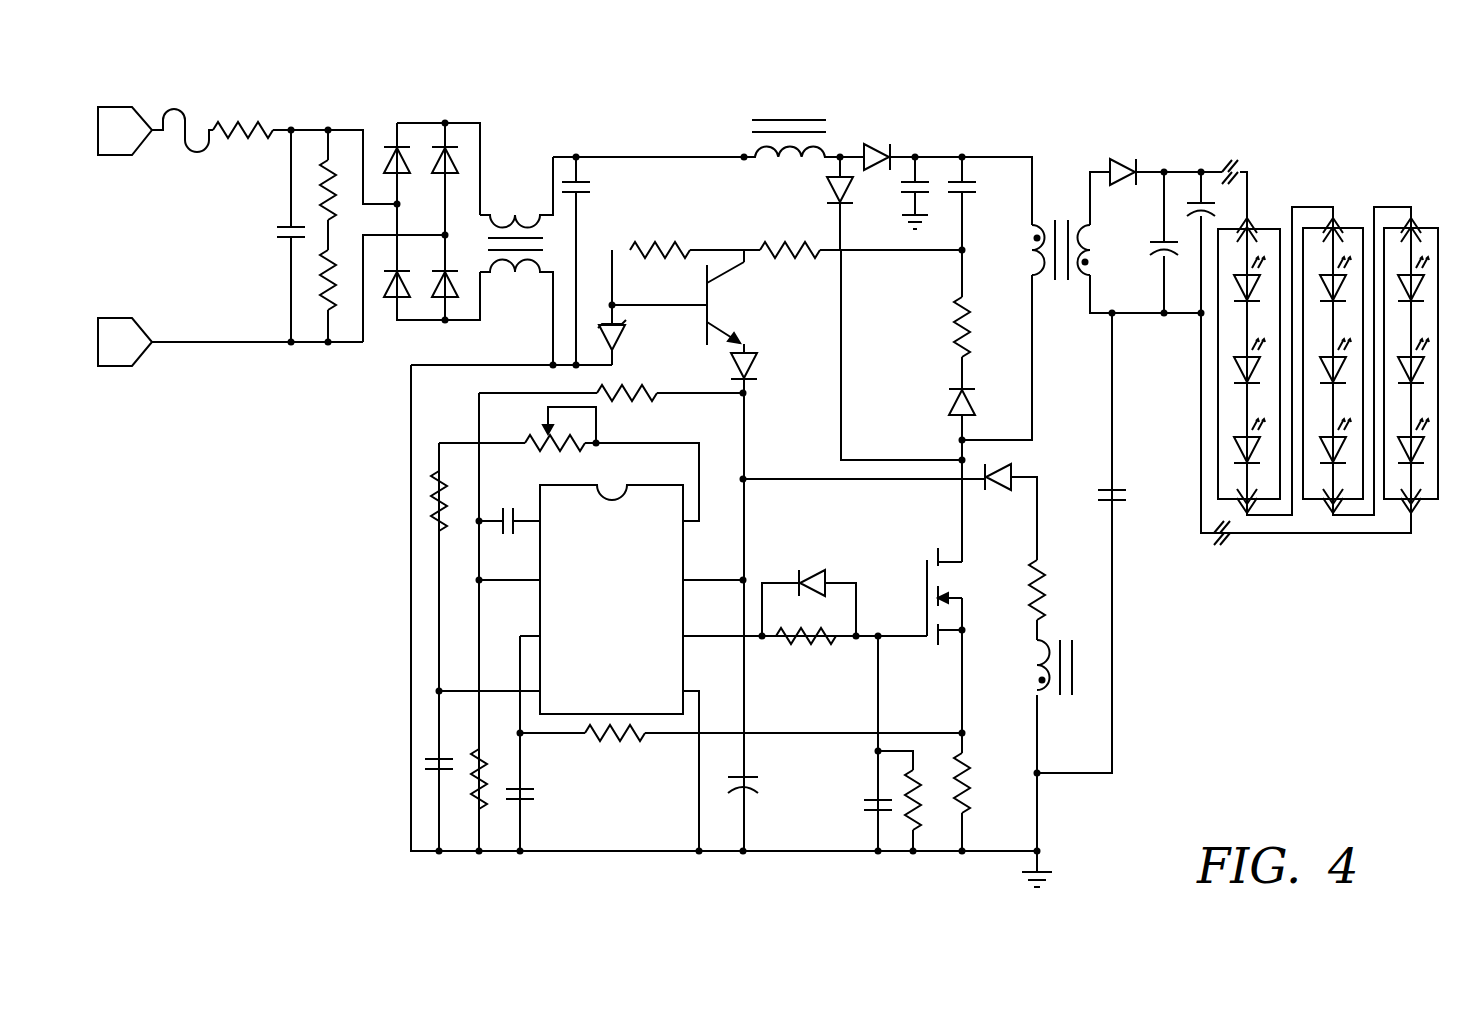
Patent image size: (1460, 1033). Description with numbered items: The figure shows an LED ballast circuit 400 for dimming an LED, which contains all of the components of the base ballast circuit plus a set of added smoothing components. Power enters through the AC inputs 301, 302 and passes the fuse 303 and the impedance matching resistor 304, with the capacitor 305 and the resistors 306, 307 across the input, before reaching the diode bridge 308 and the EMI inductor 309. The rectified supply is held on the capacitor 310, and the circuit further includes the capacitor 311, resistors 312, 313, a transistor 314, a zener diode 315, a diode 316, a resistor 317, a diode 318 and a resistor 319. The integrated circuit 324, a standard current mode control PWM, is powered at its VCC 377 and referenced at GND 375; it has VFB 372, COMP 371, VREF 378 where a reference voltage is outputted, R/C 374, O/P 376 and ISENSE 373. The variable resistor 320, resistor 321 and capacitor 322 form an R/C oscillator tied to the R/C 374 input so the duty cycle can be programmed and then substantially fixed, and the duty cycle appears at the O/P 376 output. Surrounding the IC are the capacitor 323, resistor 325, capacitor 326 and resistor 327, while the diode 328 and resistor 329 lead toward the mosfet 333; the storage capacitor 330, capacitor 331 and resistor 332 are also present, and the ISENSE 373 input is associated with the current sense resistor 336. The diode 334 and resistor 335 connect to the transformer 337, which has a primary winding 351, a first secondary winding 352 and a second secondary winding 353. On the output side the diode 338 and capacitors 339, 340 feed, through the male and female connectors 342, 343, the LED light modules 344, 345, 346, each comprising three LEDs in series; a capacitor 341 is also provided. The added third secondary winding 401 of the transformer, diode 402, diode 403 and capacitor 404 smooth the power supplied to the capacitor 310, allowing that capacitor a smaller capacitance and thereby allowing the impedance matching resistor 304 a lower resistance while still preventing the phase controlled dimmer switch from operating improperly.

The LED ballast circuit 400 is at (594, 112).
The AC input 301 is at (165, 108).
The AC input 302 is at (166, 320).
The fuse 303 is at (191, 115).
The impedance matching resistor 304 is at (240, 126).
The capacitor 305 is at (282, 230).
The resistor 306 is at (322, 192).
The resistor 307 is at (322, 288).
The diode bridge 308 is at (428, 122).
The EMI inductor 309 is at (512, 225).
The capacitor 310 is at (590, 188).
The capacitor 311 is at (976, 186).
The resistor 312 is at (660, 245).
The resistor 313 is at (798, 246).
The transistor 314 is at (712, 306).
The zener diode 315 is at (624, 342).
The diode 316 is at (754, 362).
The resistor 317 is at (958, 344).
The diode 318 is at (950, 412).
The resistor 319 is at (627, 392).
The variable resistor 320 is at (582, 440).
The resistor 321 is at (436, 480).
The capacitor 322 is at (432, 758).
The capacitor 323 is at (497, 532).
The integrated circuit 324 is at (688, 498).
The resistor 325 is at (470, 770).
The capacitor 326 is at (538, 794).
The resistor 327 is at (602, 738).
The diode 328 is at (822, 570).
The resistor 329 is at (795, 642).
The storage capacitor 330 is at (758, 776).
The capacitor 331 is at (864, 808).
The resistor 332 is at (918, 814).
The mosfet 333 is at (946, 597).
The diode 334 is at (1000, 492).
The resistor 335 is at (1048, 580).
The current sense resistor 336 is at (970, 774).
The transformer 337 is at (1059, 225).
The diode 338 is at (1126, 168).
The capacitor 339 is at (1164, 250).
The capacitor 340 is at (1193, 200).
The capacitor 341 is at (1096, 480).
The male connector 342 is at (1235, 170).
The female connector 343 is at (1222, 168).
The LED light module 344 is at (1257, 228).
The LED light module 345 is at (1350, 228).
The LED light module 346 is at (1434, 228).
The primary winding 351 is at (1031, 241).
The first secondary winding 352 is at (1092, 262).
The second secondary winding 353 is at (1064, 640).
The COMP 371 is at (563, 503).
The VFB 372 is at (547, 568).
The ISENSE 373 is at (566, 628).
The R/C 374 is at (552, 680).
The GND 375 is at (662, 680).
The O/P 376 is at (657, 622).
The VCC 377 is at (661, 565).
The VREF 378 is at (667, 505).
The third secondary winding 401 is at (791, 120).
The diode 402 is at (826, 190).
The diode 403 is at (874, 143).
The capacitor 404 is at (901, 190).